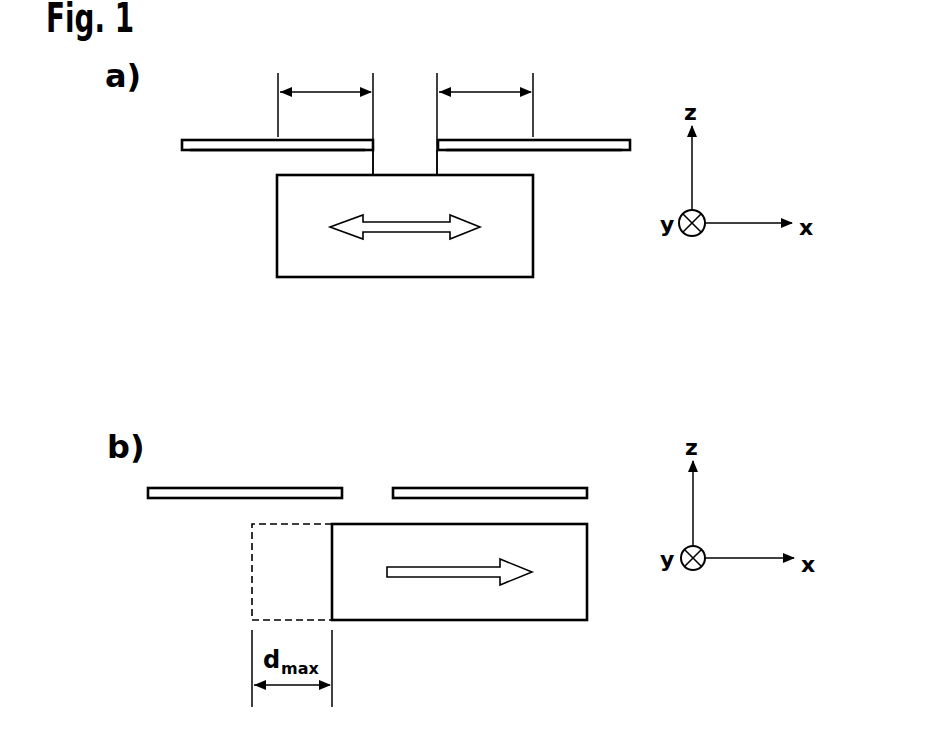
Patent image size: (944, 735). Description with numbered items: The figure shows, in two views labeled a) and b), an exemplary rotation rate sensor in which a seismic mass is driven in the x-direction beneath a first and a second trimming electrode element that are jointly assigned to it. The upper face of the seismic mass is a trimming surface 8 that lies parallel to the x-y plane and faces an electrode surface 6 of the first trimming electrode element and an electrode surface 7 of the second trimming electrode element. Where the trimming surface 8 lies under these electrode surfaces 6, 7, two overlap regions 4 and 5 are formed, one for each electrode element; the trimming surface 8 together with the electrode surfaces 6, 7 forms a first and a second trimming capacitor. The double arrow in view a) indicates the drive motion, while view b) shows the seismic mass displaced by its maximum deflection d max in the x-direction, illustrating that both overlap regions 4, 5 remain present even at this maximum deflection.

The first overlap region 4 is at (325, 119).
The second overlap region 5 is at (485, 119).
The electrode surface of first trimming electrode element 6 is at (237, 158).
The electrode surface of second trimming electrode element 7 is at (567, 158).
The trimming surface 8 is at (411, 166).